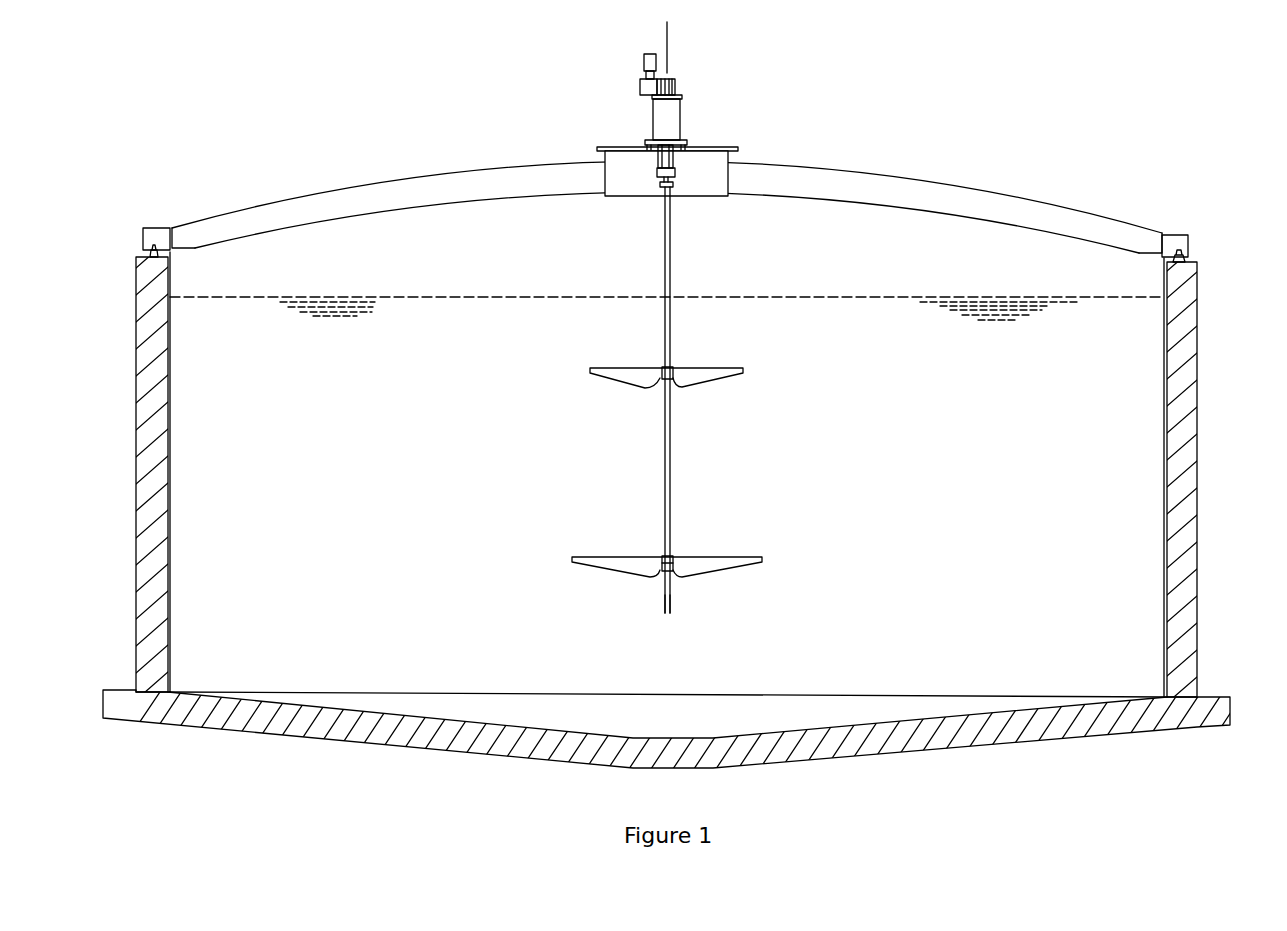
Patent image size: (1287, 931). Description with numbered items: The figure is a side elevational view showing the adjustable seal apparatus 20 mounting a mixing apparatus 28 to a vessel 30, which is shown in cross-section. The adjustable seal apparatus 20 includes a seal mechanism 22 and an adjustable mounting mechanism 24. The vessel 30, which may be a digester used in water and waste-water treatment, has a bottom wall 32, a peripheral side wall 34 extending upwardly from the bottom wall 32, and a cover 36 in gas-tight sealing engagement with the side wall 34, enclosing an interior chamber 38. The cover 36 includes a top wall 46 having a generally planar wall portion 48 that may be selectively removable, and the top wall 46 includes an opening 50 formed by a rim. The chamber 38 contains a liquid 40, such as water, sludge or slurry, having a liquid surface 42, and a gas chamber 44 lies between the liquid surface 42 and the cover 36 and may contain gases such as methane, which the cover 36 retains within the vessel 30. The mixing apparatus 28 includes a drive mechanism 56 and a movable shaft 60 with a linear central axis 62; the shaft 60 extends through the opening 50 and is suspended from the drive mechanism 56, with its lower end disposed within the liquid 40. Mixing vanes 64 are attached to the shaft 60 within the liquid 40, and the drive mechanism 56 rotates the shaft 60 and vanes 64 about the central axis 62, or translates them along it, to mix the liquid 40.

The adjustable seal apparatus 20 is at (688, 322).
The seal mechanism 22 is at (680, 170).
The adjustable mounting mechanism 24 is at (650, 138).
The mixing apparatus 28 is at (687, 77).
The vessel 30 is at (690, 465).
The bottom wall 32 is at (927, 738).
The peripheral side wall 34 is at (155, 460).
The cover 36 is at (667, 196).
The interior chamber 38 is at (1138, 410).
The liquid 40 is at (667, 291).
The liquid surface 42 is at (457, 300).
The gas chamber 44 is at (948, 278).
The top wall 46 is at (845, 172).
The generally planar wall portion 48 is at (717, 150).
The opening 50 is at (683, 155).
The drive mechanism 56 is at (642, 110).
The movable shaft 60 is at (672, 283).
The linear central axis 62 is at (668, 595).
The mixing vanes 64 is at (703, 383).